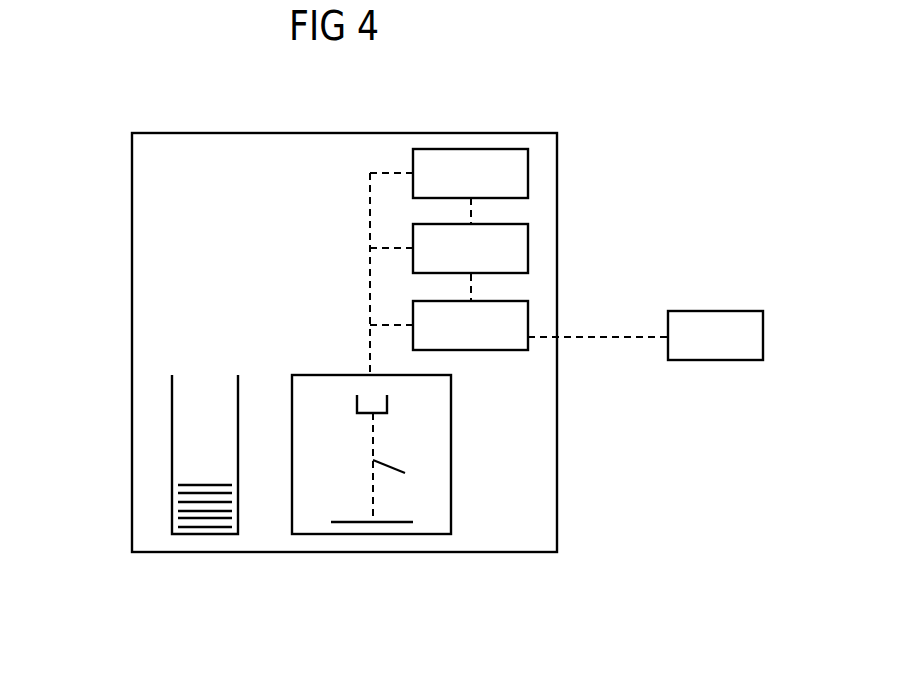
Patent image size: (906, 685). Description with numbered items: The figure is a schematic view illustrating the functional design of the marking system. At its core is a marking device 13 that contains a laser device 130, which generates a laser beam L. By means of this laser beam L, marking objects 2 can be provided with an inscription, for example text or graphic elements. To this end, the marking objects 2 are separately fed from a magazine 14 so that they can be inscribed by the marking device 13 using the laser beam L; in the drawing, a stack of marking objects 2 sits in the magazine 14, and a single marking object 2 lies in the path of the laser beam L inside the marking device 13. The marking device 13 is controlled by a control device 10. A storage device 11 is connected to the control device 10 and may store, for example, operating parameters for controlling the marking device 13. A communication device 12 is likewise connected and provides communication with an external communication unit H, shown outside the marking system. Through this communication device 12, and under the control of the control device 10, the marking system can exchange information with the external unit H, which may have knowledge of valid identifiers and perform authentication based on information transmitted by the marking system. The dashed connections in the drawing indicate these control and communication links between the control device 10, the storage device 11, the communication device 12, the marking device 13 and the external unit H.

The control device 10 is at (528, 173).
The storage device 11 is at (528, 253).
The communication device 12 is at (528, 320).
The marking device 13 is at (443, 535).
The laser device 130 is at (387, 405).
The magazine 14 is at (172, 444).
The marking object 2 is at (197, 535).
The laser beam L is at (405, 473).
The external communication unit H is at (703, 311).